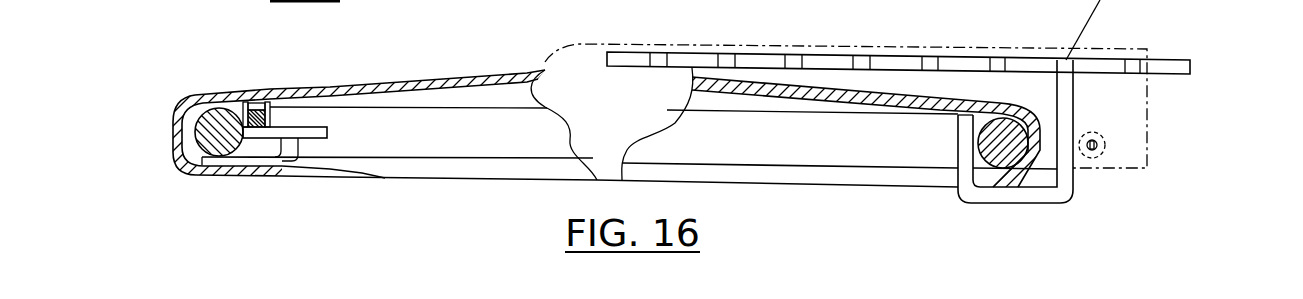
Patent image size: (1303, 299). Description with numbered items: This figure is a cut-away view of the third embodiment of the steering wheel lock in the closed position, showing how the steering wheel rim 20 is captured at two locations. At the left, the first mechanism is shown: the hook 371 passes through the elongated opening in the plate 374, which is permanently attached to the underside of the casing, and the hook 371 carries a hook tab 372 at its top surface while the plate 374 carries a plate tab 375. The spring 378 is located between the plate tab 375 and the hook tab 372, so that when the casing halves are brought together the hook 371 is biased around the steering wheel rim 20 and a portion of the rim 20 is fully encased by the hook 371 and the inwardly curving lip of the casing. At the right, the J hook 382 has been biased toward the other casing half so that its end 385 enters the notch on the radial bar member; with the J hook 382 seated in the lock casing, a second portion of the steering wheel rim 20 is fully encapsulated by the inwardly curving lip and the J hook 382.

The steering wheel rim 20 is at (205, 137).
The hook 371 is at (257, 178).
The hook tab 372 is at (282, 112).
The plate 374 is at (305, 138).
The plate tab 375 is at (223, 97).
The spring 378 is at (255, 100).
The J hook 382 is at (1073, 198).
The J hook end 385 is at (1083, 80).